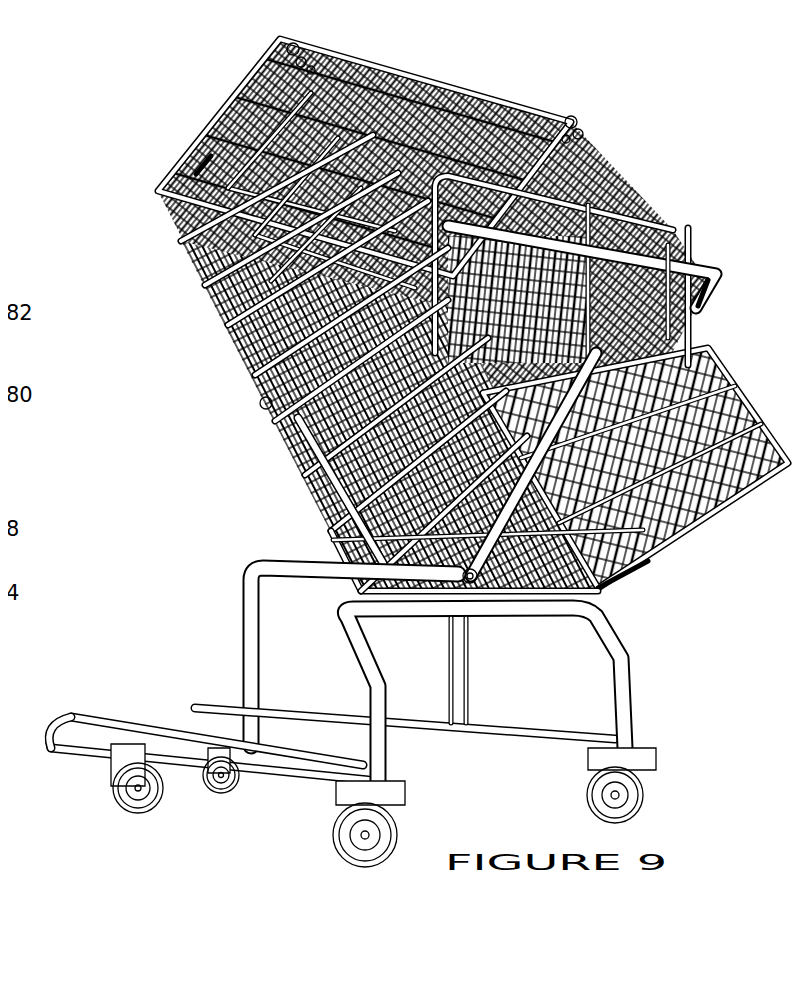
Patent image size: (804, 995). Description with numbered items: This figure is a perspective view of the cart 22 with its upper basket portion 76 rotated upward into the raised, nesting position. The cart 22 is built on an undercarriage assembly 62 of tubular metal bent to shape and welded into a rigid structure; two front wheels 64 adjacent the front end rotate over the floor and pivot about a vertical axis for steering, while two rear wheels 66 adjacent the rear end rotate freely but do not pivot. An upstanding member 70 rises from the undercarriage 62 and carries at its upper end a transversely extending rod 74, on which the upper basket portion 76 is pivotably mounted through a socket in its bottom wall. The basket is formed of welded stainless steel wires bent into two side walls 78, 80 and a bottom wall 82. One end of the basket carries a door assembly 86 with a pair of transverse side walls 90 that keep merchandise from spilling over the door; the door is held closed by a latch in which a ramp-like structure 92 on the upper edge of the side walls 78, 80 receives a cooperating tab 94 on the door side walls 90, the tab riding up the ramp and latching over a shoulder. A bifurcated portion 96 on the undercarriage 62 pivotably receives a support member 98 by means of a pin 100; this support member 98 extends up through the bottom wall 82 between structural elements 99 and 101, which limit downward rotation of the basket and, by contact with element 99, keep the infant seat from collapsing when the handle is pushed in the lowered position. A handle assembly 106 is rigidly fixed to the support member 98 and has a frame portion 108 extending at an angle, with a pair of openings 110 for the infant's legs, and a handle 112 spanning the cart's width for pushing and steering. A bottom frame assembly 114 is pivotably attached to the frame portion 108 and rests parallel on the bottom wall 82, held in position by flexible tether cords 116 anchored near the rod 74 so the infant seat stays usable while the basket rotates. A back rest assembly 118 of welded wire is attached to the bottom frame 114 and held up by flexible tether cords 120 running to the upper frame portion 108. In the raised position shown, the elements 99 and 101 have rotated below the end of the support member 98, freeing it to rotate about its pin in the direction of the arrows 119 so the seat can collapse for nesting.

The cart 22 is at (703, 231).
The undercarriage assembly 62 is at (233, 610).
The front wheels 64 is at (105, 767).
The rear wheels 66 is at (392, 812).
The upstanding member 70 is at (262, 414).
The transversely extending rod 74 is at (252, 394).
The upper basket portion 76 is at (181, 252).
The side wall 78 is at (150, 187).
The side wall 80 is at (523, 225).
The bottom wall 82 is at (292, 466).
The door assembly 86 is at (428, 63).
The side walls 90 is at (345, 76).
The ramp-like structure 92 is at (290, 38).
The cooperating tab 94 is at (287, 53).
The bifurcated portion 96 is at (308, 60).
The support member 98 is at (522, 610).
The structural element 99 is at (320, 524).
The pin 100 is at (403, 600).
The structural element 101 is at (602, 606).
The handle assembly 106 is at (712, 289).
The frame portion 108 is at (617, 205).
The openings 110 is at (630, 326).
The handle 112 is at (706, 262).
The bottom frame assembly 114 is at (600, 388).
The flexible tether cords 116 is at (310, 475).
The back rest assembly 118 is at (190, 167).
The arrows 119 is at (640, 556).
The flexible tether cords 120 is at (660, 233).